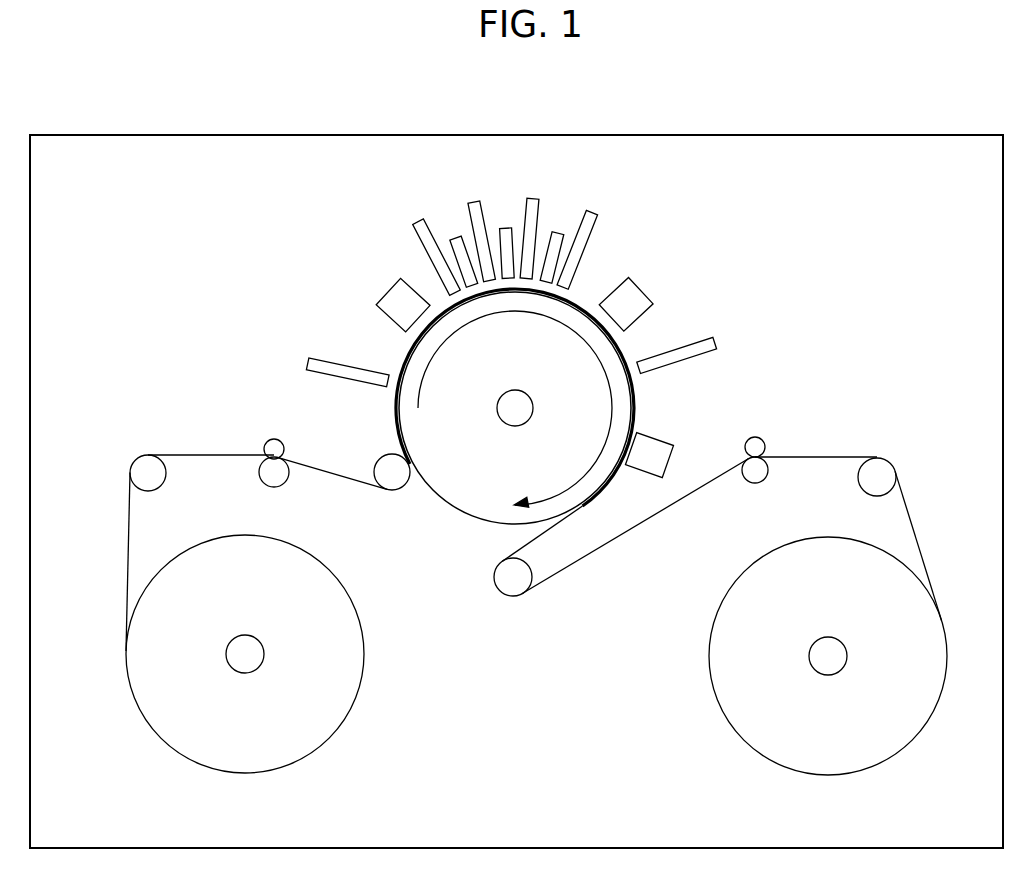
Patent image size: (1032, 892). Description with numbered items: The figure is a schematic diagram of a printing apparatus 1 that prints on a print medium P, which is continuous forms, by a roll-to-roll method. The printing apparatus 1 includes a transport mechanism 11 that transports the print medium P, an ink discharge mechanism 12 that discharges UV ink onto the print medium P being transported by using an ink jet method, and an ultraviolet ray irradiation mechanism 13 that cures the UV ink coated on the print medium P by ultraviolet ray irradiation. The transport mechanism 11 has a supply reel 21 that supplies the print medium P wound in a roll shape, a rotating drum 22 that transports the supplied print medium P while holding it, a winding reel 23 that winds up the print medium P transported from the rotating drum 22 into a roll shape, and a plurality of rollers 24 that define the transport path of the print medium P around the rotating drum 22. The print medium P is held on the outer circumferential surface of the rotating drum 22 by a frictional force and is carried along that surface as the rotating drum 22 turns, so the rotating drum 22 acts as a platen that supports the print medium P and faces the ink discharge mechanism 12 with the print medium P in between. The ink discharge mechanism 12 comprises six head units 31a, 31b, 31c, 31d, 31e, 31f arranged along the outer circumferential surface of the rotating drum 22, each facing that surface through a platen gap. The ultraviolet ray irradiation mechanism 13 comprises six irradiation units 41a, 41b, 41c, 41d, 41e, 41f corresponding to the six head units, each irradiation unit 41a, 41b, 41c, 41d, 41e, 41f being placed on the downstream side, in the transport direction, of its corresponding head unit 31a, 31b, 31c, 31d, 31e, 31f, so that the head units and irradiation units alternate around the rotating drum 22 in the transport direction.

The printing apparatus 1 is at (978, 106).
The transport mechanism 11 is at (245, 684).
The ink discharge mechanism 12 is at (510, 146).
The ultraviolet ray irradiation mechanism 13 is at (515, 321).
The supply reel 21 is at (235, 660).
The rotating drum 22 is at (460, 498).
The winding reel 23 is at (835, 661).
The rollers 24 is at (390, 463).
The head unit 31a is at (312, 364).
The head unit 31b is at (420, 227).
The head unit 31c is at (476, 205).
The head unit 31d is at (533, 203).
The head unit 31e is at (591, 214).
The head unit 31f is at (713, 342).
The irradiation unit 41a is at (390, 296).
The irradiation unit 41b is at (455, 241).
The irradiation unit 41c is at (506, 230).
The irradiation unit 41d is at (555, 234).
The irradiation unit 41e is at (634, 293).
The irradiation unit 41f is at (657, 443).
The print medium P is at (128, 522).